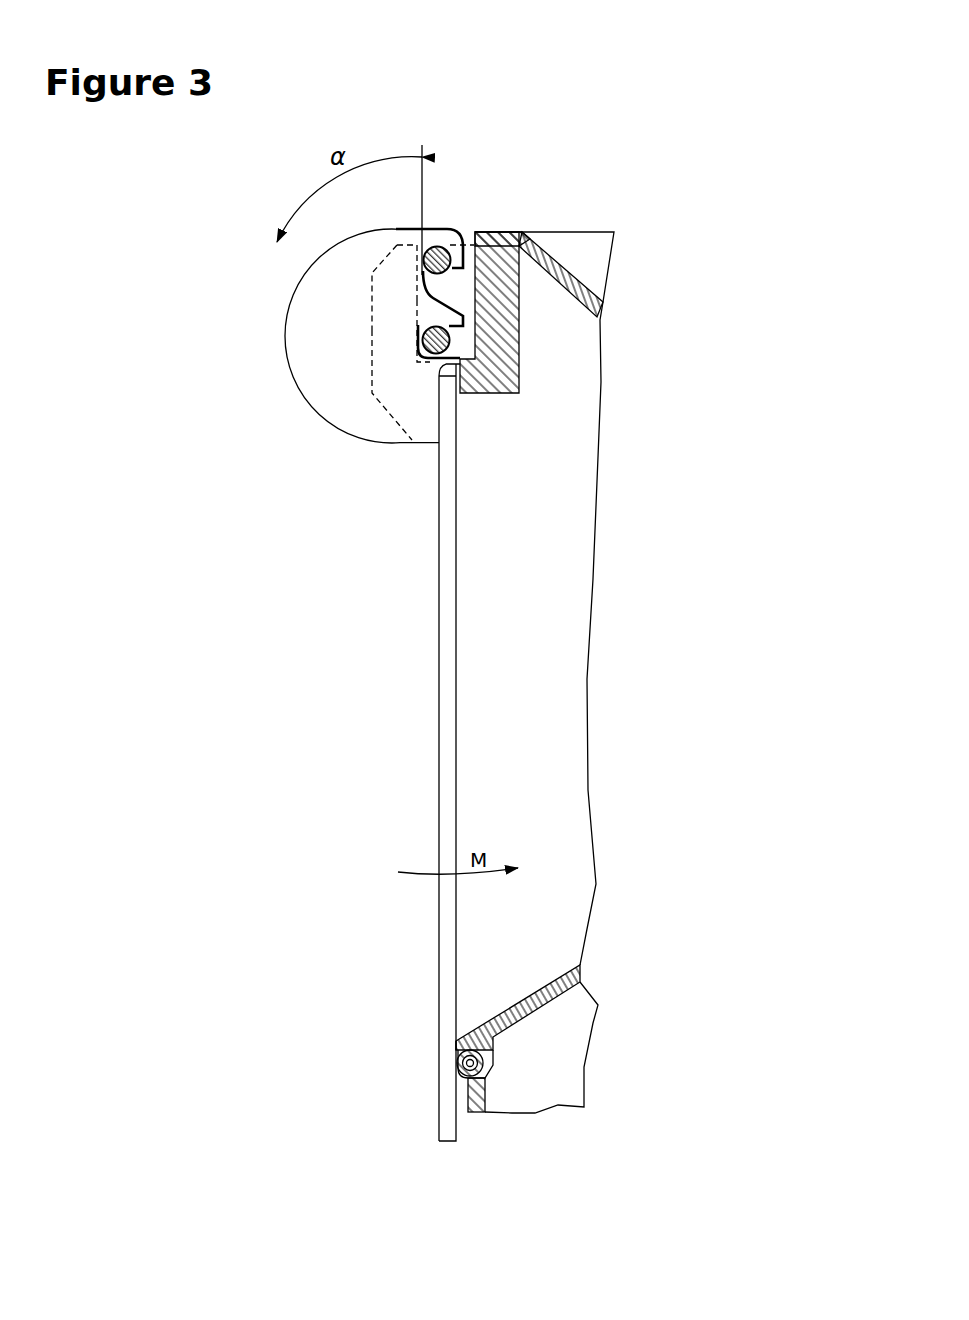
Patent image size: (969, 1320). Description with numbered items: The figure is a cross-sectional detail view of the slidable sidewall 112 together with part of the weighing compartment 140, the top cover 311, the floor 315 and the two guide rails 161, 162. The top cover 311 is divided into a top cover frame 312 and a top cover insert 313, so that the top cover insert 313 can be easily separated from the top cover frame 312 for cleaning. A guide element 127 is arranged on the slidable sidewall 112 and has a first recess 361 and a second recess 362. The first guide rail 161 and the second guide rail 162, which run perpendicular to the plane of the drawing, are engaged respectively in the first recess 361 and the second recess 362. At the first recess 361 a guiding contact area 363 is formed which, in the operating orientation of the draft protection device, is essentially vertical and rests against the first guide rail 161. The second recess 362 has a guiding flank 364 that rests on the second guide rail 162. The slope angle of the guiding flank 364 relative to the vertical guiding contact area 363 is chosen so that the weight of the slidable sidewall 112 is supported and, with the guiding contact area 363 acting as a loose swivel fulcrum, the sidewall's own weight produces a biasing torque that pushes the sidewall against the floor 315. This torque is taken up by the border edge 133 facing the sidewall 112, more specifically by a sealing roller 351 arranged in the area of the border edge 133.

The slidable sidewall 112 is at (450, 610).
The guide element 127 is at (262, 393).
The border edge 133 is at (456, 1043).
The weighing compartment 140 is at (530, 585).
The first guide rail 161 is at (279, 303).
The second guide rail 162 is at (257, 393).
The top cover 311 is at (550, 231).
The top cover frame 312 is at (503, 368).
The top cover insert 313 is at (603, 301).
The floor 315 is at (557, 999).
The sealing roller 351 is at (492, 1067).
The first recess 361 is at (443, 242).
The second recess 362 is at (412, 343).
The guiding contact area 363 is at (421, 262).
The guiding flank 364 is at (632, 275).